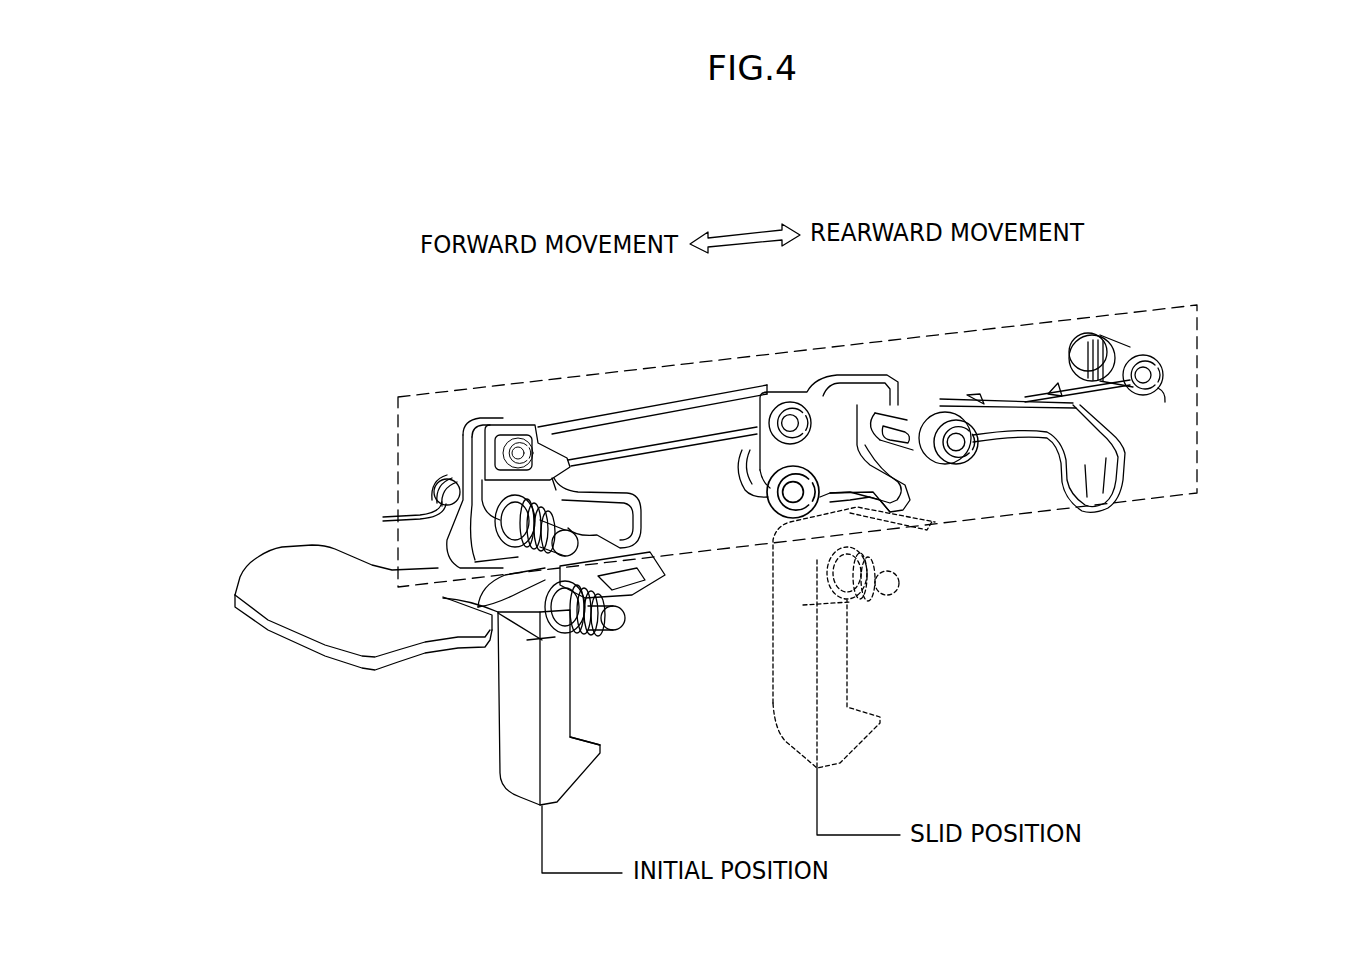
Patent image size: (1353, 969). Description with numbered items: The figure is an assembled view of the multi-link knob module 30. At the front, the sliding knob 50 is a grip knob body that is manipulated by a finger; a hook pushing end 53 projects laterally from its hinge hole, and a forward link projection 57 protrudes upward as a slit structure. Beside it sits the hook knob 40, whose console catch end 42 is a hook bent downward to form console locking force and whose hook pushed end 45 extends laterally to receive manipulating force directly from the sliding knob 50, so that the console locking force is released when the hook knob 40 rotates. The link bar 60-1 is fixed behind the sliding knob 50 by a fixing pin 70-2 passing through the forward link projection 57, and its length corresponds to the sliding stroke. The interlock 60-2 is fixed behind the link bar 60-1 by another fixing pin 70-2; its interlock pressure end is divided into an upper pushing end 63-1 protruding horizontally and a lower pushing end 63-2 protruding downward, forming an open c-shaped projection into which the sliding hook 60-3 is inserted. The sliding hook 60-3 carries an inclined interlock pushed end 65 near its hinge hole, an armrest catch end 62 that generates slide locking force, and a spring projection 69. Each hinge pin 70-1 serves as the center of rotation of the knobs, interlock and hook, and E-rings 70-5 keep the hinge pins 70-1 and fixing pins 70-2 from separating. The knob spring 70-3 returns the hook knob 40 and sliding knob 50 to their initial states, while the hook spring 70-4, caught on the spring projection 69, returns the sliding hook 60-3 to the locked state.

The multi-link knob module 30 is at (207, 406).
The hook knob 40 is at (515, 718).
The console catch end 42 is at (572, 777).
The hook pushed end 45 is at (640, 575).
The sliding knob 50 is at (315, 623).
The hook pushing end 53 is at (620, 533).
The forward link projection 57 is at (467, 463).
The link bar 60-1 is at (660, 425).
The interlock 60-2 is at (825, 432).
The sliding hook 60-3 is at (997, 427).
The armrest catch end 62 is at (1100, 493).
The upper pushing end 63-1 is at (885, 412).
The lower pushing end 63-2 is at (897, 493).
The interlock pushed end 65 is at (903, 428).
The spring projection 69 is at (1058, 383).
The hinge pin 70-1 is at (1143, 375).
The fixing pin 70-2 is at (523, 451).
The knob spring 70-3 is at (383, 517).
The hook spring 70-4 is at (1100, 388).
The E-ring 70-5 is at (497, 445).